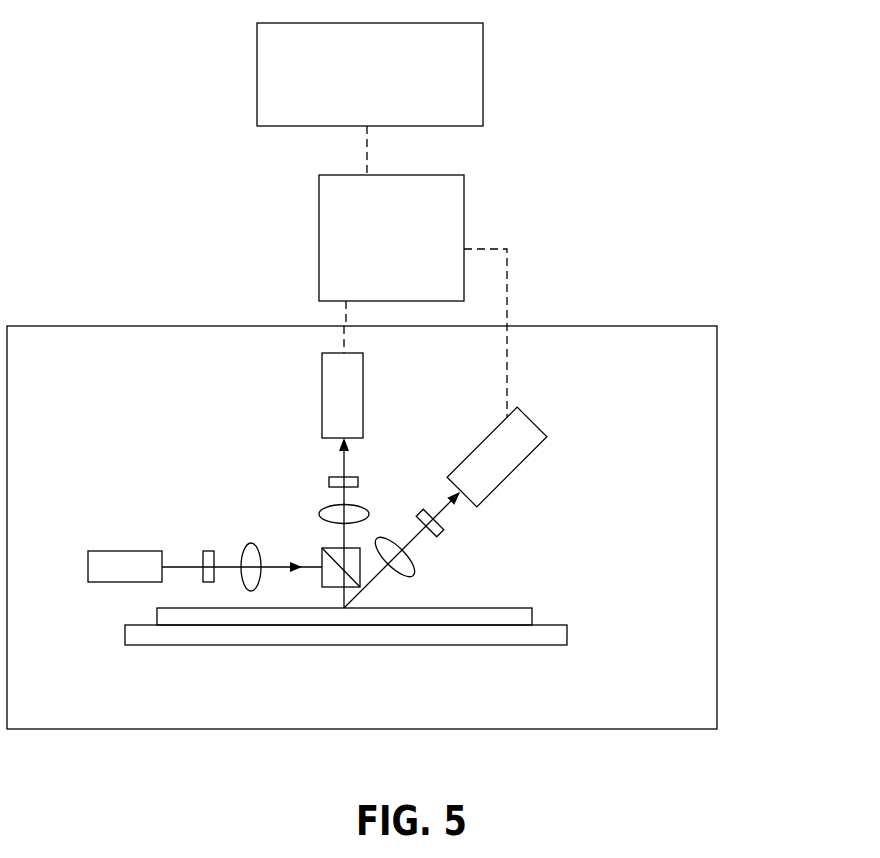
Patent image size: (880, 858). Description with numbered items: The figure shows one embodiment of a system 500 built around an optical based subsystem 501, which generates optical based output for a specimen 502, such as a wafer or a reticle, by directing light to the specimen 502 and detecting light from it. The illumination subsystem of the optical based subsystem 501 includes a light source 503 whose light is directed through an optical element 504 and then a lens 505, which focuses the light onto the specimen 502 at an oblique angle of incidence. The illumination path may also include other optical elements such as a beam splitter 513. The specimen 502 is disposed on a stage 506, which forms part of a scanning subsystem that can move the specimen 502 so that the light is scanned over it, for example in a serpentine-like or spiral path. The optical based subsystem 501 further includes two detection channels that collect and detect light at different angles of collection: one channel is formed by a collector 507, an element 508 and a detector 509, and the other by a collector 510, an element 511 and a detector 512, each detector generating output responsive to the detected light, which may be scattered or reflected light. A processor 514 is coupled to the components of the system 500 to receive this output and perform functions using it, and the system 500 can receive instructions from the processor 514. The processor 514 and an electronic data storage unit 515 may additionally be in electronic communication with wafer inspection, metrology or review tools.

The system 500 is at (146, 94).
The optical based subsystem 501 is at (717, 347).
The specimen 502 is at (157, 608).
The light source 503 is at (100, 551).
The optical element 504 is at (210, 551).
The lens 505 is at (250, 543).
The stage 506 is at (125, 628).
The collector 507 is at (320, 505).
The element 508 is at (330, 477).
The detector 509 is at (322, 398).
The collector 510 is at (415, 575).
The element 511 is at (437, 533).
The detector 512 is at (530, 457).
The beam splitter 513 is at (337, 548).
The processor 514 is at (408, 249).
The electronic data storage unit 515 is at (384, 86).